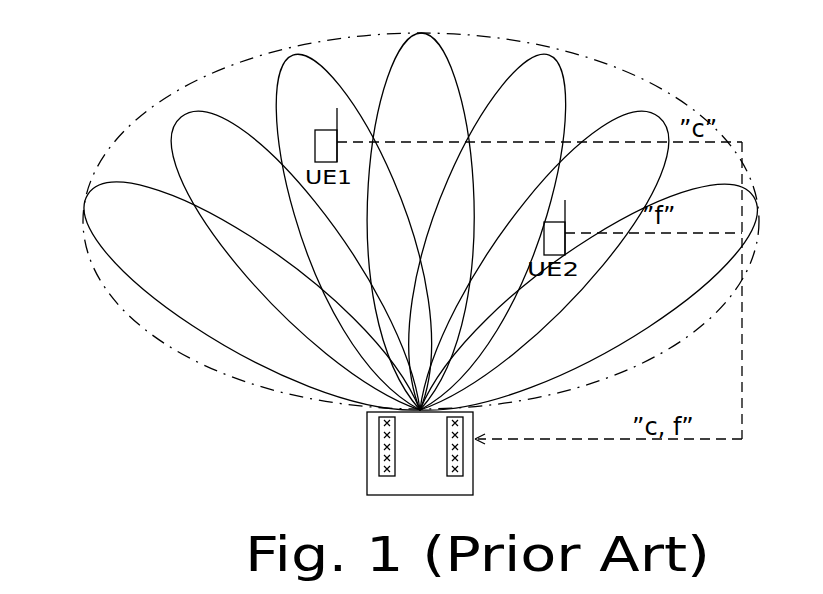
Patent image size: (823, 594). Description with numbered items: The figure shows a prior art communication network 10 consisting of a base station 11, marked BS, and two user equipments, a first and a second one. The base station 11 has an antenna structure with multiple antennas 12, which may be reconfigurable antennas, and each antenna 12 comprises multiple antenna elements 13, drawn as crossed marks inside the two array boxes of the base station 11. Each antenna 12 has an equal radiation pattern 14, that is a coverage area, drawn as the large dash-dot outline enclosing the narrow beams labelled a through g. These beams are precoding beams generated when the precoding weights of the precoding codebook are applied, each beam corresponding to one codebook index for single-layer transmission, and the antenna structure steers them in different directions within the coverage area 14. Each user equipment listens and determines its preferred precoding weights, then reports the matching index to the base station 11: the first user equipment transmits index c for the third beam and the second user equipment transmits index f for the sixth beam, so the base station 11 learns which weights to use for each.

The communication network 10 is at (126, 62).
The base station 11 is at (368, 493).
The antenna 12 is at (379, 468).
The antenna element 13 is at (380, 424).
The radiation pattern 14 is at (596, 58).